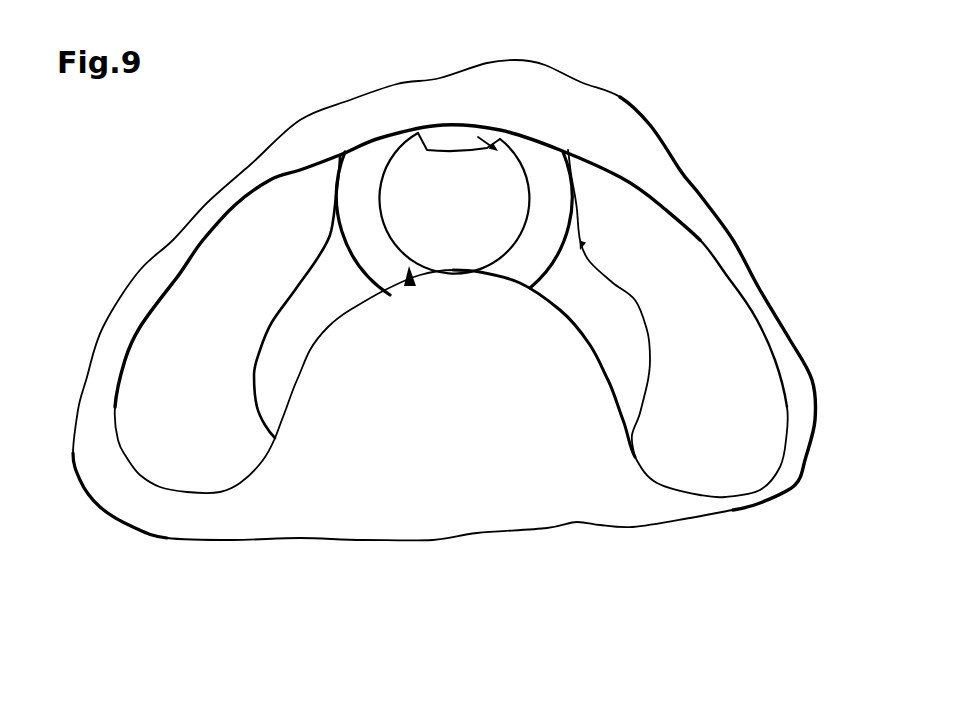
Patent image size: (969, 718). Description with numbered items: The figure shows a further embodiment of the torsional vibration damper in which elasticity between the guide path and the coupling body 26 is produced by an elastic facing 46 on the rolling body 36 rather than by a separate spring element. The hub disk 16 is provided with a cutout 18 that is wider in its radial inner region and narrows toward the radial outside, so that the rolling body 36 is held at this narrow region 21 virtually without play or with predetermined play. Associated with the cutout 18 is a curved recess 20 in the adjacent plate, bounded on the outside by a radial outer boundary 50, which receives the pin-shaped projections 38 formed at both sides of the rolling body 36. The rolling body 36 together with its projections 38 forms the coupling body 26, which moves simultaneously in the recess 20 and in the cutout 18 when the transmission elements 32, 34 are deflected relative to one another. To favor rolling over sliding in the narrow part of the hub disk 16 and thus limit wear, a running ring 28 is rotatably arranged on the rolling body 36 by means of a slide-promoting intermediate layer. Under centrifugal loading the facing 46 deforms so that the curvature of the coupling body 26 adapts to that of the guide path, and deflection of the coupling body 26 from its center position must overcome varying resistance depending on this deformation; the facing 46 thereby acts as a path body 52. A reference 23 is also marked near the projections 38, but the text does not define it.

The hub disk 16 is at (167, 473).
The cutout 18 is at (322, 318).
The recess 20 is at (750, 467).
The narrow region 21 is at (568, 200).
The resilient tongue 23 is at (584, 242).
The coupling body 26 is at (412, 287).
The running ring 28 is at (517, 268).
The transmission element 32 is at (818, 364).
The transmission element 34 is at (644, 446).
The rolling body 36 is at (506, 128).
The pin-shaped projection 38 is at (403, 180).
The facing 46 is at (437, 124).
The radial outer boundary 50 is at (363, 140).
The path body 52 is at (535, 132).